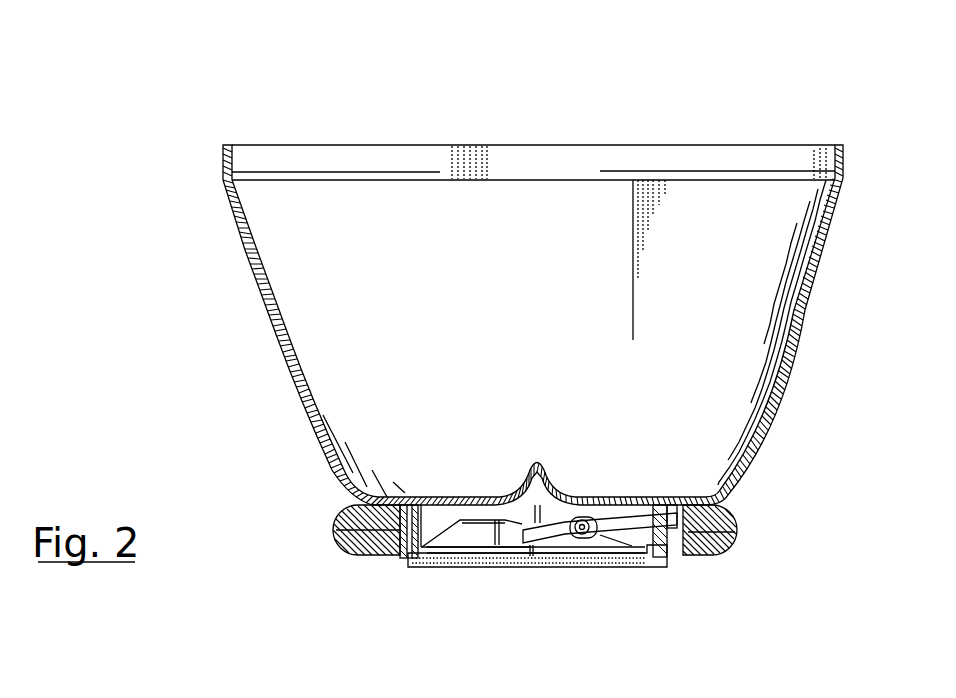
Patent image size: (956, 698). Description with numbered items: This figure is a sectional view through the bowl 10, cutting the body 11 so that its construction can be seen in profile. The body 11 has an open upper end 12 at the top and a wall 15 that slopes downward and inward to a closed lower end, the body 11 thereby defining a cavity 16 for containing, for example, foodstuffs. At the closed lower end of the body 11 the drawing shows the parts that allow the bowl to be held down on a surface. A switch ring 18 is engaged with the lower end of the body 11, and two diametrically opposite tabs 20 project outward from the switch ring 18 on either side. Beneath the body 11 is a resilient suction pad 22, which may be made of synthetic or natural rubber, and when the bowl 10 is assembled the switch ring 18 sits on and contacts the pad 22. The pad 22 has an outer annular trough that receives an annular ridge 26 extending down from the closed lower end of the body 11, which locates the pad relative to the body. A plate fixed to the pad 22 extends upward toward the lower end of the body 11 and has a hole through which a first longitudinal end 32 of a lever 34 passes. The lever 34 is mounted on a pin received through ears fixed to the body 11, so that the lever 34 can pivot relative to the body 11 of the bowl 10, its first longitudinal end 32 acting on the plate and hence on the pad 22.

The bowl 10 is at (680, 115).
The body 11 is at (785, 362).
The open upper end 12 is at (386, 166).
The wall 15 is at (250, 254).
The cavity 16 is at (544, 262).
The switch ring 18 is at (392, 560).
The tabs 20 is at (342, 547).
The resilient suction pad 22 is at (648, 558).
The annular ridge 26 is at (340, 515).
The first longitudinal end 32 is at (525, 567).
The lever 34 is at (565, 568).